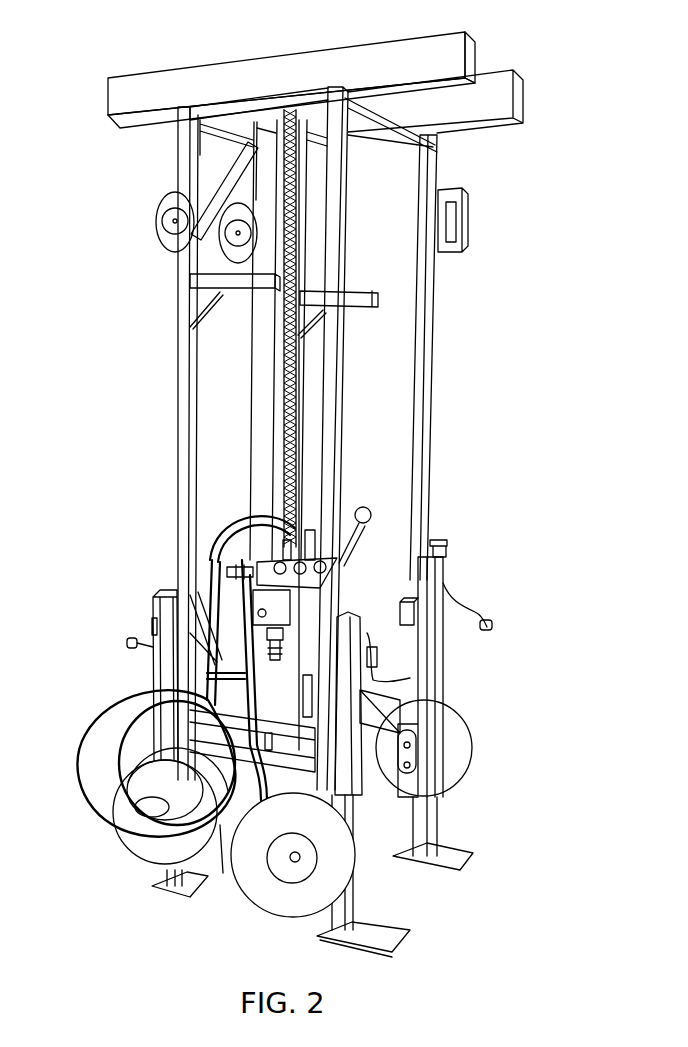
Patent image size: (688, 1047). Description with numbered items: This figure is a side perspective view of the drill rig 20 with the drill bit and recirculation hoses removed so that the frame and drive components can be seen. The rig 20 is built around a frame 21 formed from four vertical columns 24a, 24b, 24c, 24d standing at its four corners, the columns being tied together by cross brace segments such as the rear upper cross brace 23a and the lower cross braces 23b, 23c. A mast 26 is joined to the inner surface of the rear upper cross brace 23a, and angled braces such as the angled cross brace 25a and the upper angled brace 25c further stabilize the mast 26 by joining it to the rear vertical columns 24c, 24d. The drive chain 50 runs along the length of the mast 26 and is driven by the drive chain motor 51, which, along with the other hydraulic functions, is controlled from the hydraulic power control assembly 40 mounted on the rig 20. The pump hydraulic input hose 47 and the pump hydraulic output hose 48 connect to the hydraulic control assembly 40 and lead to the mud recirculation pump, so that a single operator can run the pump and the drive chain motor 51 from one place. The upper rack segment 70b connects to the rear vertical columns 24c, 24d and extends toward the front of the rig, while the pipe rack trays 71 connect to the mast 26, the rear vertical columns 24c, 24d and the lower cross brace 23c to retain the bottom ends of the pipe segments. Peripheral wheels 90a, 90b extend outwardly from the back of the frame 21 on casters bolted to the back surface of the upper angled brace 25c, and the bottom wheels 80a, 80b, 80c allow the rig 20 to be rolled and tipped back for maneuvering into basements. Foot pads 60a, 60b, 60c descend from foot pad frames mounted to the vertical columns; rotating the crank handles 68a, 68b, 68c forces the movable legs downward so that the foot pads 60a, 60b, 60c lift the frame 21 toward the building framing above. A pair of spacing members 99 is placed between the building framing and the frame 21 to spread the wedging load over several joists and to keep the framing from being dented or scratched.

The spacing member 99 is at (138, 86).
The rear upper cross brace 23a is at (397, 117).
The lower cross brace segment 23b is at (216, 110).
The lower cross brace 23c is at (250, 130).
The vertical column 24a is at (332, 183).
The vertical column 24b is at (457, 225).
The rear vertical column 24c is at (183, 383).
The rear vertical column 24d is at (250, 312).
The angled cross brace 25a is at (233, 183).
The upper angled brace 25c is at (207, 635).
The peripheral wheel 90a is at (157, 212).
The peripheral wheel 90b is at (245, 212).
The upper rack segment 70b is at (210, 285).
The frame 21 is at (420, 323).
The drive chain 50 is at (286, 353).
The mast 26 is at (252, 402).
The drill rig 20 is at (440, 519).
The hydraulic power control assembly 40 is at (343, 563).
The crank handle 68a is at (407, 680).
The crank handle 68b is at (487, 627).
The crank handle 68c is at (133, 640).
The pump hydraulic input hose 47 is at (87, 725).
The pump hydraulic output hose 48 is at (82, 753).
The pipe rack tray 71 is at (207, 730).
The drive chain motor 51 is at (222, 873).
The bottom wheel 80a is at (277, 897).
The bottom wheel 80b is at (472, 748).
The rear bottom wheel 80c is at (145, 860).
The foot pad 60a is at (380, 940).
The foot pad 60b is at (460, 855).
The foot pad 60c is at (177, 897).